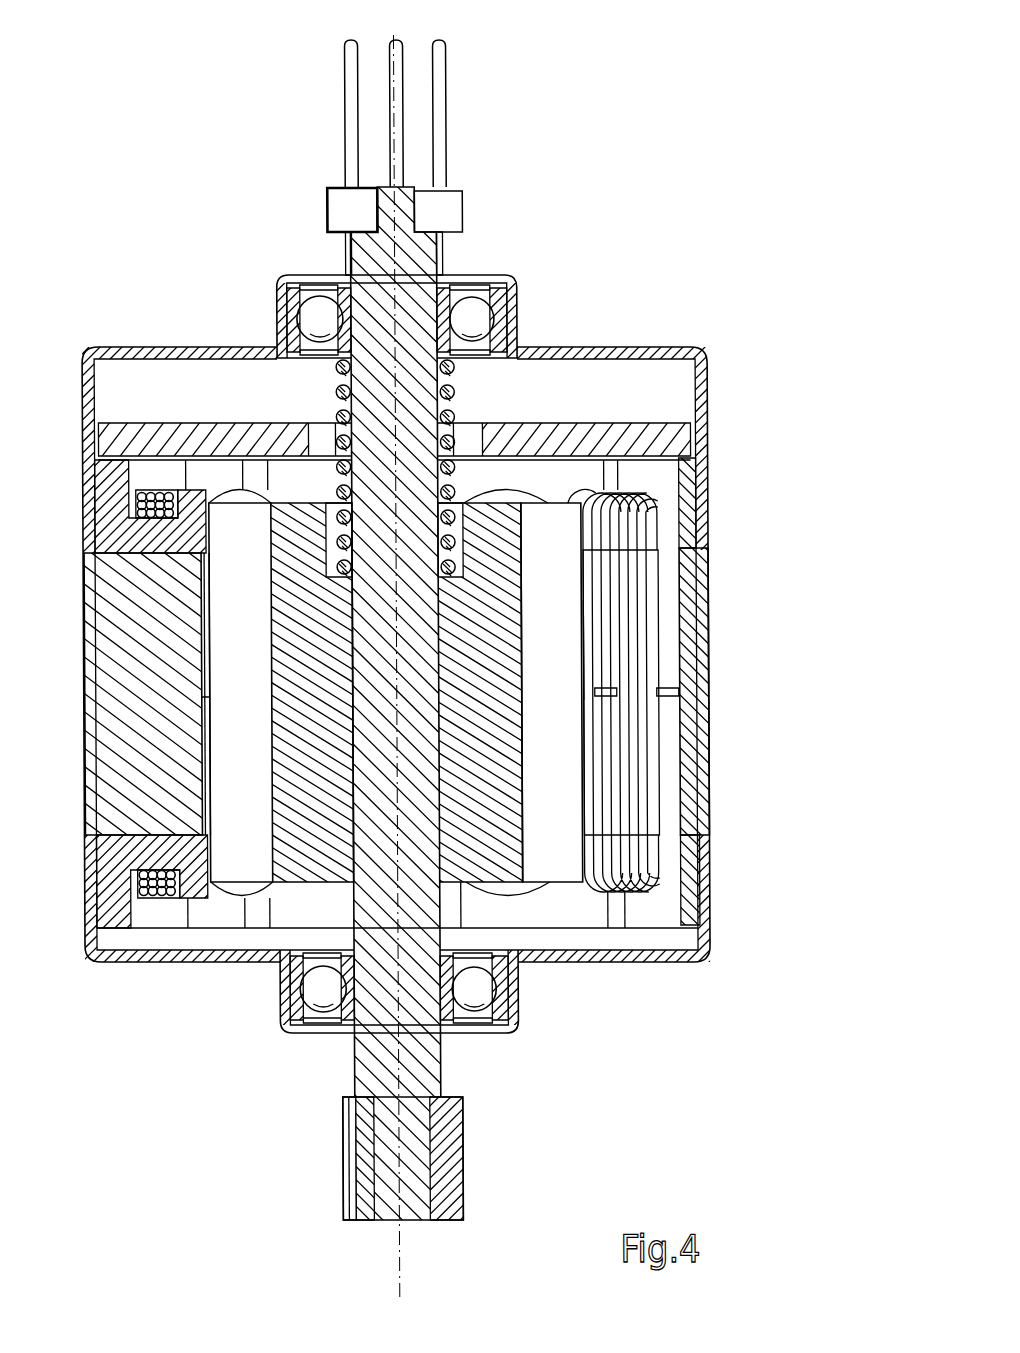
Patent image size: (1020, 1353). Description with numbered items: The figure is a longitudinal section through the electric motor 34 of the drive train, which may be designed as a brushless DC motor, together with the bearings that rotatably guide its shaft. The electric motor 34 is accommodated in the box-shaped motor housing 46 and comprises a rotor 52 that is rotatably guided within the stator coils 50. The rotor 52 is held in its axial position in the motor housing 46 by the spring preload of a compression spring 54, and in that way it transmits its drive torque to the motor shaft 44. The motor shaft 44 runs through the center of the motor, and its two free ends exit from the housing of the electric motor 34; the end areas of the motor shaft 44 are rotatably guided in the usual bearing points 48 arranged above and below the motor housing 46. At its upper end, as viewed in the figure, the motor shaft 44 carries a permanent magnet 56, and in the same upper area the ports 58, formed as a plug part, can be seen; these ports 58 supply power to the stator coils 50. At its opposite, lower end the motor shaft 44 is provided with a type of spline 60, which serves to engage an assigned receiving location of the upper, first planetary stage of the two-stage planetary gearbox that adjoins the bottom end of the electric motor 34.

The electric motor 34 is at (650, 541).
The motor shaft 44 is at (418, 1078).
The motor housing 46 is at (592, 356).
The bearing points 48 is at (507, 286).
The stator coils 50 is at (157, 500).
The rotor 52 is at (564, 826).
The compression spring 54 is at (453, 412).
The permanent magnet 56 is at (430, 216).
The ports 58 is at (355, 86).
The spline 60 is at (446, 1146).